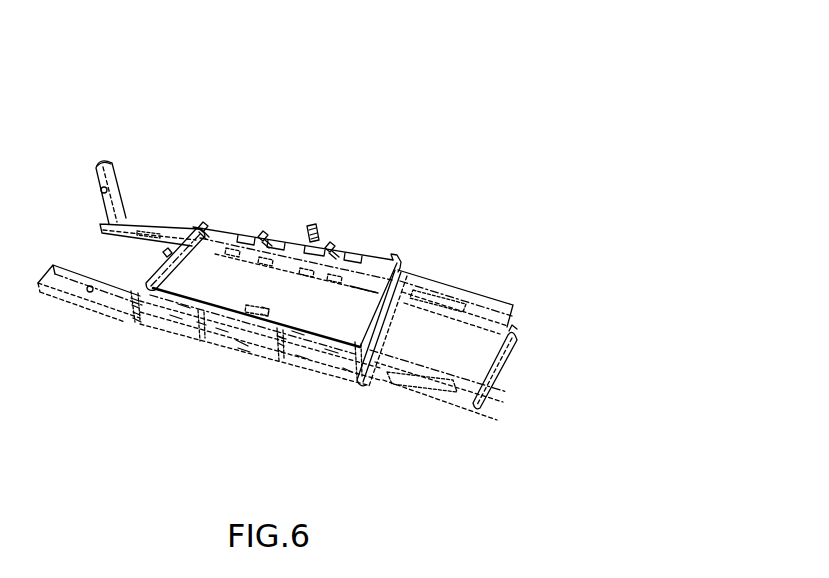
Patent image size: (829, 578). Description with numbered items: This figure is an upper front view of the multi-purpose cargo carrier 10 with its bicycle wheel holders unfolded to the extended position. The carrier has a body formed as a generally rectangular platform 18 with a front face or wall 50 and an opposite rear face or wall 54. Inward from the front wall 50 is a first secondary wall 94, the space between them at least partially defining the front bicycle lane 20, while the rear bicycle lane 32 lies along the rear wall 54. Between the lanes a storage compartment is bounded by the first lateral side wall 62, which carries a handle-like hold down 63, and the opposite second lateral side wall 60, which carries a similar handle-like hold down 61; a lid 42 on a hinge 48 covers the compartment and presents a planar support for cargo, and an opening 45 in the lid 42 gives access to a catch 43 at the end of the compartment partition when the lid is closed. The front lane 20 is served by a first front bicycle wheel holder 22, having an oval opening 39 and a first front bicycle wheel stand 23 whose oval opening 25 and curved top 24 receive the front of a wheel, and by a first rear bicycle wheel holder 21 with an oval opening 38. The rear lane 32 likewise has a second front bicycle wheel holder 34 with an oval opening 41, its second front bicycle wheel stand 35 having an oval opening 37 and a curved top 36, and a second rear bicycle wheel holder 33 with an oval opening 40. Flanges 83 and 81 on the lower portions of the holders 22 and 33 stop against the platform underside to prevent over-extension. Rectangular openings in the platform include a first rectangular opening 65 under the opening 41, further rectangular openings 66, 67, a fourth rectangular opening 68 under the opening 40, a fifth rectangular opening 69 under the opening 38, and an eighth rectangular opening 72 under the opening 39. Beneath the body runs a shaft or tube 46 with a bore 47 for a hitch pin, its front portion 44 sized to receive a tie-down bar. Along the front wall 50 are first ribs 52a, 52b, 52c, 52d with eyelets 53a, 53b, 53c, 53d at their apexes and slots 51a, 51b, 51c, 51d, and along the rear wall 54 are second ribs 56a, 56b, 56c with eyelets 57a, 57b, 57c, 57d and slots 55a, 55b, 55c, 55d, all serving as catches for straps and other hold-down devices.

The multi-purpose cargo carrier 10 is at (452, 70).
The platform 18 is at (150, 325).
The front bicycle lane 20 is at (54, 278).
The first rear bicycle wheel holder 21 is at (84, 300).
The first front bicycle wheel holder 22 is at (418, 396).
The first front bicycle wheel stand 23 is at (500, 374).
The curved top 24 is at (512, 344).
The oval opening 25 is at (499, 358).
The rear bicycle lane 32 is at (489, 305).
The second rear bicycle wheel holder 33 is at (421, 285).
The second front bicycle wheel holder 34 is at (126, 233).
The second front bicycle wheel stand 35 is at (122, 193).
The curved top 36 is at (104, 164).
The oval opening 37 is at (100, 191).
The oval opening 38 is at (89, 285).
The oval opening 39 is at (440, 386).
The oval opening 40 is at (444, 303).
The oval opening 41 is at (152, 232).
The lid 42 is at (296, 301).
The catch 43 is at (256, 306).
The shaft front portion 44 is at (243, 351).
The lid opening 45 is at (264, 308).
The shaft 46 is at (311, 230).
The bore 47 is at (317, 242).
The hinge 48 is at (356, 285).
The front wall 50 is at (185, 331).
The slot 51a is at (176, 317).
The slot 51b is at (222, 331).
The slot 51c is at (261, 341).
The slot 51d is at (302, 357).
The first rib 52a is at (136, 318).
The first rib 52b is at (201, 323).
The first rib 52c is at (283, 337).
The first rib 52d is at (346, 372).
The eyelet 53a is at (134, 295).
The eyelet 53b is at (206, 316).
The eyelet 53c is at (281, 334).
The eyelet 53d is at (356, 346).
The rear wall 54 is at (212, 236).
The slot 55a is at (246, 236).
The slot 55b is at (276, 243).
The slot 55c is at (314, 246).
The slot 55d is at (351, 258).
The second rib 56a is at (199, 232).
The second rib 56b is at (266, 232).
The second rib 56c is at (333, 250).
The eyelet 57a is at (205, 226).
The eyelet 57b is at (261, 232).
The eyelet 57c is at (331, 245).
The eyelet 57d is at (397, 259).
The second lateral side wall 60 is at (165, 276).
The handle-like structure 61 is at (163, 254).
The first lateral side wall 62 is at (377, 331).
The handle-like structure 63 is at (384, 322).
The first rectangular opening 65 is at (232, 253).
The slot 66 is at (269, 266).
The slot 67 is at (306, 280).
The fourth rectangular opening 68 is at (332, 279).
The fifth rectangular opening 69 is at (182, 306).
The eighth rectangular opening 72 is at (331, 351).
The flange 81 is at (388, 311).
The flange 83 is at (362, 388).
The first secondary wall 94 is at (298, 333).